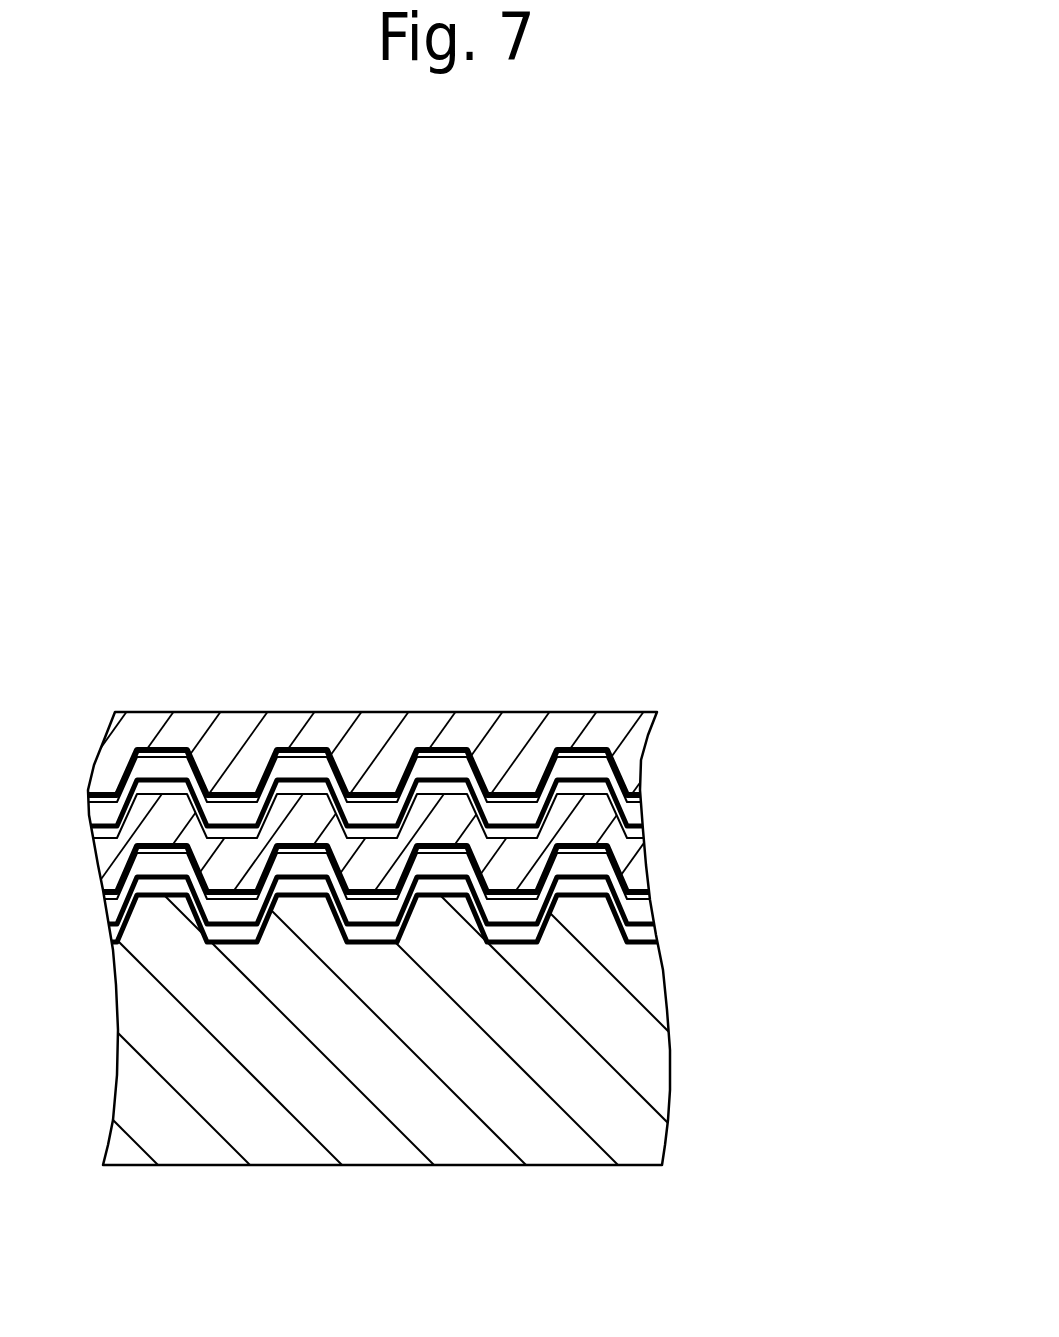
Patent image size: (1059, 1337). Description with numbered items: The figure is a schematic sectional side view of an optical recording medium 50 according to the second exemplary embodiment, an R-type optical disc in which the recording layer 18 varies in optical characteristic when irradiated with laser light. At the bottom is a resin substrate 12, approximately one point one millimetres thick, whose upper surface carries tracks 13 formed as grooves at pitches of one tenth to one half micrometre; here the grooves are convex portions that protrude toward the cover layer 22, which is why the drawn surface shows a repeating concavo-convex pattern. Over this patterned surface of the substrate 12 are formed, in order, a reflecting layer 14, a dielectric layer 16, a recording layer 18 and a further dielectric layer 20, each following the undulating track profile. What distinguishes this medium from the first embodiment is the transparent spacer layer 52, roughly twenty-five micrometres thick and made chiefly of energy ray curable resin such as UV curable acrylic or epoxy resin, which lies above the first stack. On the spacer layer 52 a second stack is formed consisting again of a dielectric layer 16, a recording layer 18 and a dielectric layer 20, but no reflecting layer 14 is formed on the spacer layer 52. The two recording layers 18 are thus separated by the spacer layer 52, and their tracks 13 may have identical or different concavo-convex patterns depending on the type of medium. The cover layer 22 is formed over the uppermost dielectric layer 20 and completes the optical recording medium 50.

The substrate 12 is at (670, 1068).
The tracks 13 is at (430, 833).
The reflecting layer 14 is at (108, 937).
The dielectric layer 16 is at (642, 840).
The recording layer 18 is at (642, 820).
The dielectric layer 20 is at (642, 800).
The cover layer 22 is at (652, 713).
The optical recording medium 50 is at (424, 540).
The spacer layer 52 is at (645, 868).